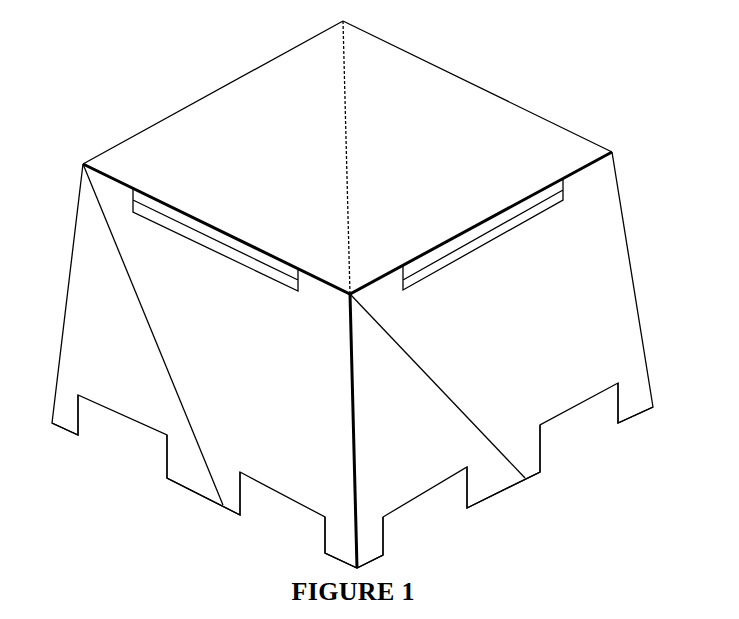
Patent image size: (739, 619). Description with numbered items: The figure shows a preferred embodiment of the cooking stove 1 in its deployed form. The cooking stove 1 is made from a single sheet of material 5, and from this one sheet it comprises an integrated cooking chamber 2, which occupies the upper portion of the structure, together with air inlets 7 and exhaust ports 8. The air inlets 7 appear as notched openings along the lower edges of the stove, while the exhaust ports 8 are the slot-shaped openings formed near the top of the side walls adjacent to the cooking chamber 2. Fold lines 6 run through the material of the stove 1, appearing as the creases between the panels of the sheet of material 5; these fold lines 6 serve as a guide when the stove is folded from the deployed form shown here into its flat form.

The cooking stove 1 is at (71, 66).
The cooking chamber 2 is at (462, 88).
The sheet of material 5 is at (626, 240).
The fold lines 6 is at (317, 38).
The air inlets 7 is at (352, 475).
The exhaust ports 8 is at (270, 268).